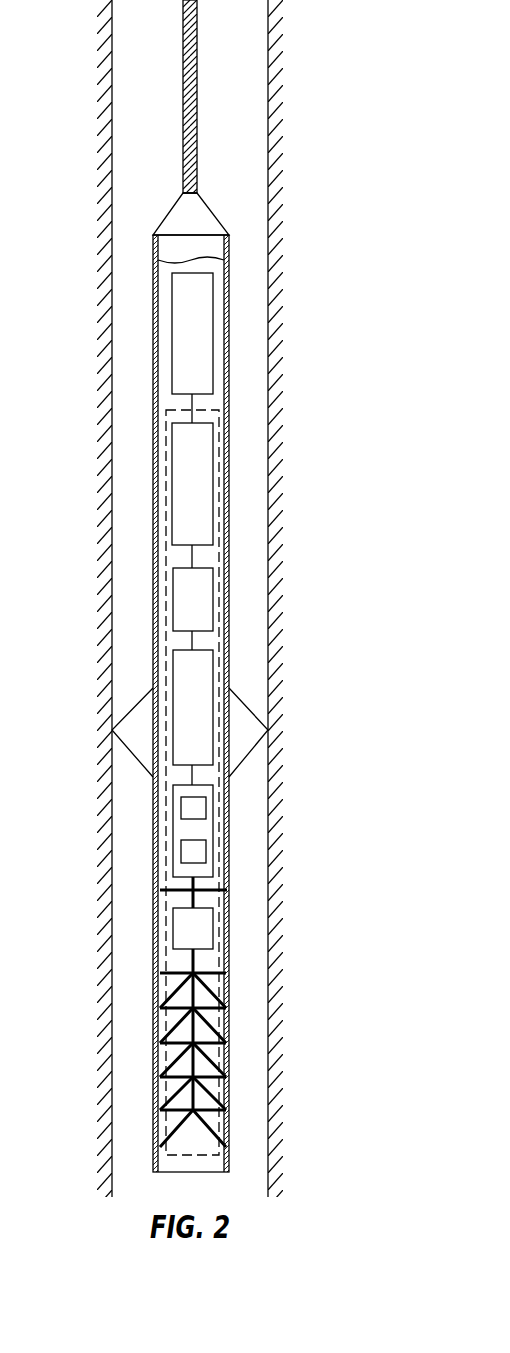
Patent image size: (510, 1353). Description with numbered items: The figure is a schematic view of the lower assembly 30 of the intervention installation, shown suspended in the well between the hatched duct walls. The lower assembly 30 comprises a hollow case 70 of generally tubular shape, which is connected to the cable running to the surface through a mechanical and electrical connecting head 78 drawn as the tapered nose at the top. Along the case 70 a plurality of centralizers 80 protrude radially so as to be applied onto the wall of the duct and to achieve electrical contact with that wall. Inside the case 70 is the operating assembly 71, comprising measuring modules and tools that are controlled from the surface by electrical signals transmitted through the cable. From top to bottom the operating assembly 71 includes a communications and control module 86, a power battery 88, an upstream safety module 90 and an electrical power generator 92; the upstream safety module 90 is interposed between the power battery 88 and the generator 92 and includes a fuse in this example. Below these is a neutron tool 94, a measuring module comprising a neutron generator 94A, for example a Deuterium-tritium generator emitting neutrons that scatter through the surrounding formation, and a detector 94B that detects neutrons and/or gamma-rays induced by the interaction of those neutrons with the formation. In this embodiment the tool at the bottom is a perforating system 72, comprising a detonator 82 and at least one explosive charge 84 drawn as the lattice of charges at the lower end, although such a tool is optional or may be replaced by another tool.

The mechanical and electrical connecting head 78 is at (202, 225).
The hollow case 70 is at (227, 353).
The lower assembly 30 is at (252, 450).
The communications and control module 86 is at (172, 360).
The operating assembly 71 is at (235, 598).
The power battery 88 is at (172, 462).
The upstream safety module 90 is at (173, 600).
The electrical power generator 92 is at (173, 678).
The centralizers 80 is at (257, 752).
The neutron tool 94 is at (187, 831).
The neutron generator 94A is at (206, 803).
The detector 94B is at (206, 850).
The perforating system 72 is at (255, 1015).
The detonator 82 is at (213, 927).
The explosive charge 84 is at (213, 1049).